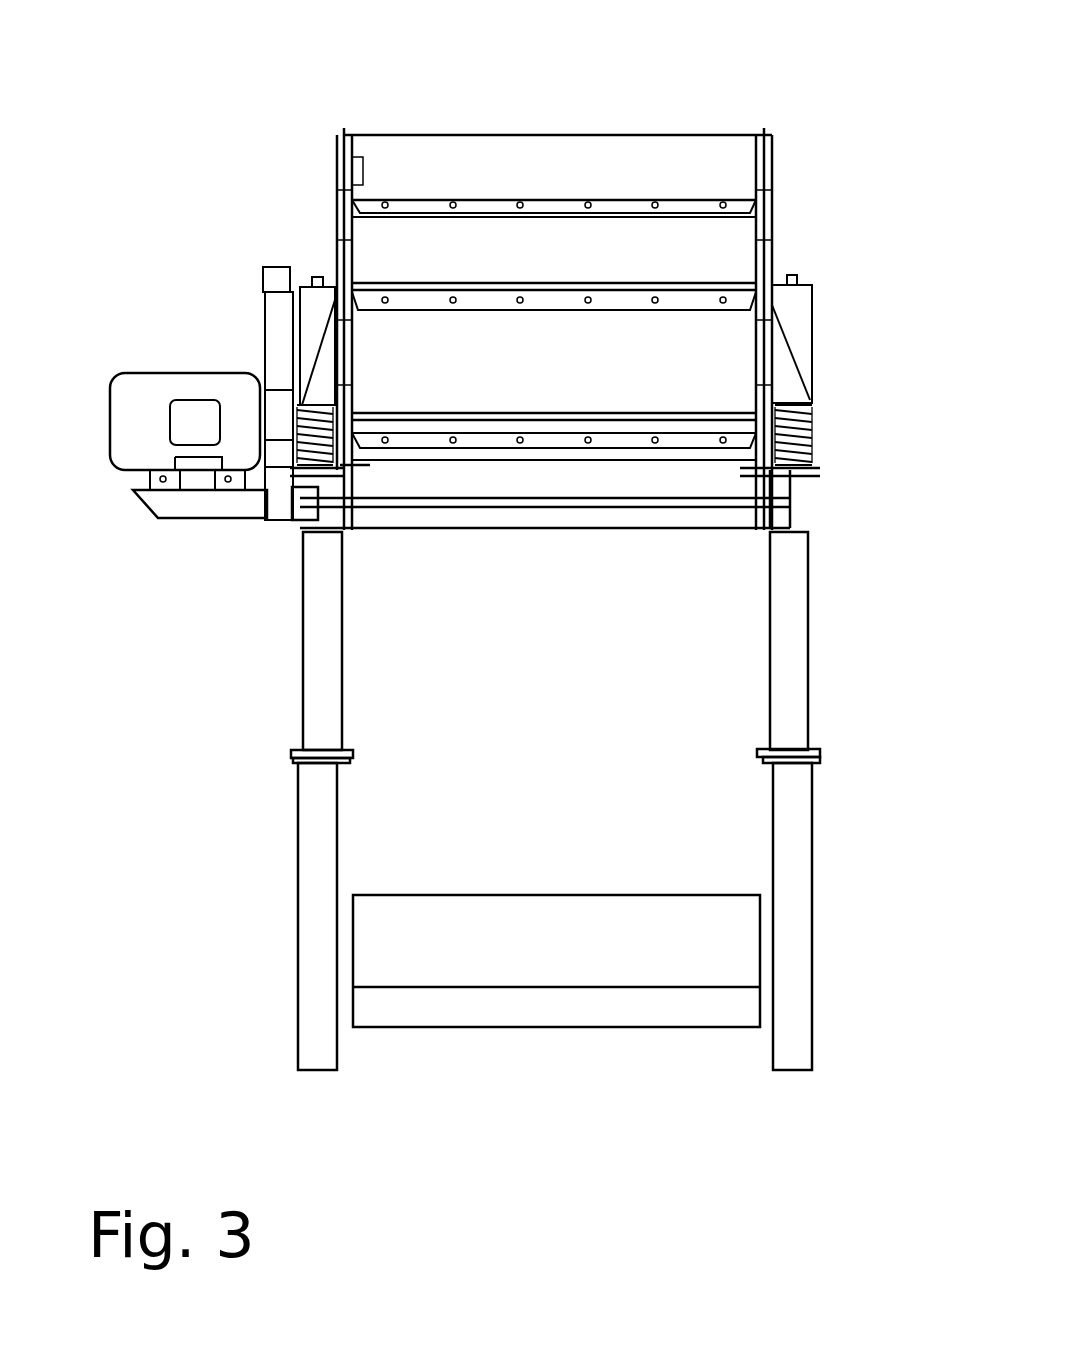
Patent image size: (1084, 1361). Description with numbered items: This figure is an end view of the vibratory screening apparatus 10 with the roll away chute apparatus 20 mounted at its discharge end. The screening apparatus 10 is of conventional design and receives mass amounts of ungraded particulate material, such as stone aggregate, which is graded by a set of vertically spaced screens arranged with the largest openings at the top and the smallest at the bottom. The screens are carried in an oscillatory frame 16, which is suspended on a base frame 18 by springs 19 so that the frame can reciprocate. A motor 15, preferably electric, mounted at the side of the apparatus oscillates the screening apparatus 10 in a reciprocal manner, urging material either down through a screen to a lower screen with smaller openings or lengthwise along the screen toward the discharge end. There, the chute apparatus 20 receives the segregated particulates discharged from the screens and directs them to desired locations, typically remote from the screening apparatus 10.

The vibratory screening apparatus 10 is at (323, 72).
The chute apparatus 20 is at (640, 125).
The oscillatory frame 16 is at (767, 252).
The springs 19 is at (325, 402).
The motor 15 is at (148, 395).
The base frame 18 is at (780, 515).